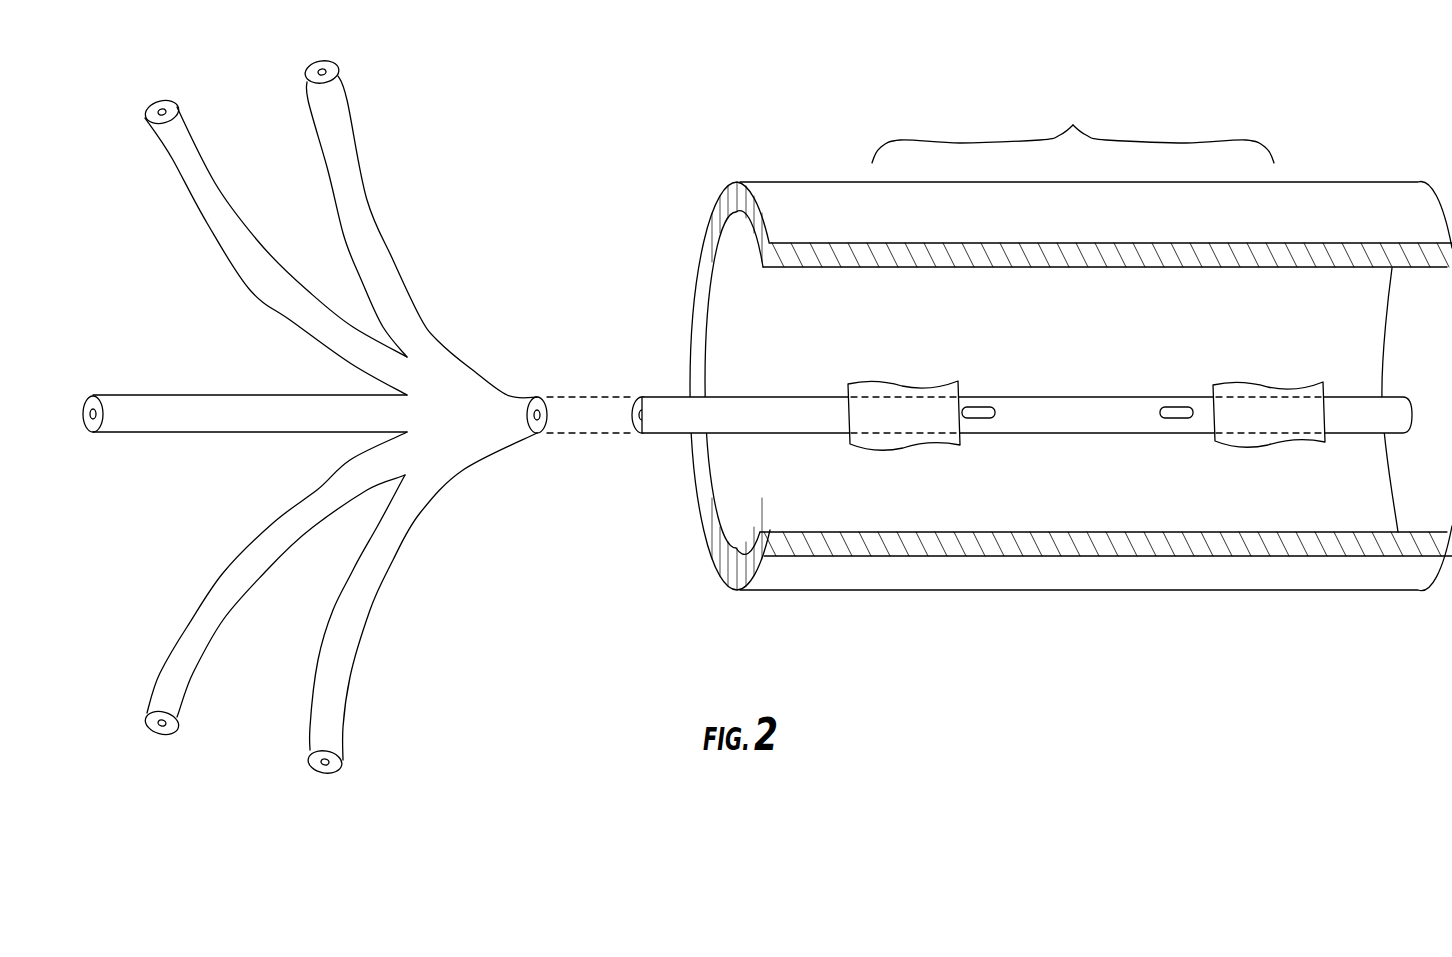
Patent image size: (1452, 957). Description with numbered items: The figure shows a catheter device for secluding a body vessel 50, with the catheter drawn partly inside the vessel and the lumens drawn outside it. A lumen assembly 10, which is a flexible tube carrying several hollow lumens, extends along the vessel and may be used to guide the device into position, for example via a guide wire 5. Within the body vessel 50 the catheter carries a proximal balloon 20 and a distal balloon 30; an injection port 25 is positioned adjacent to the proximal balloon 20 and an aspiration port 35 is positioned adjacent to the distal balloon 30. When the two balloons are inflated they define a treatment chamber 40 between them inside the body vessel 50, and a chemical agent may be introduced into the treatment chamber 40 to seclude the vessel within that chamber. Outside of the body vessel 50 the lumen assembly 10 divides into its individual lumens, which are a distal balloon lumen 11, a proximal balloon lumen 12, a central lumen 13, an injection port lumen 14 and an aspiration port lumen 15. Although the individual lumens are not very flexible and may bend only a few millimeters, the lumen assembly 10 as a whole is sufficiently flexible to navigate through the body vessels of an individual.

The guide wire 5 is at (669, 436).
The lumen assembly 10 is at (507, 395).
The distal balloon lumen 11 is at (345, 102).
The proximal balloon lumen 12 is at (188, 128).
The central lumen 13 is at (127, 395).
The injection port lumen 14 is at (187, 628).
The aspiration port lumen 15 is at (330, 628).
The proximal balloon 20 is at (890, 446).
The injection port 25 is at (973, 405).
The distal balloon 30 is at (1265, 443).
The aspiration port 35 is at (1176, 405).
The treatment chamber 40 is at (1073, 124).
The body vessel 50 is at (1283, 182).